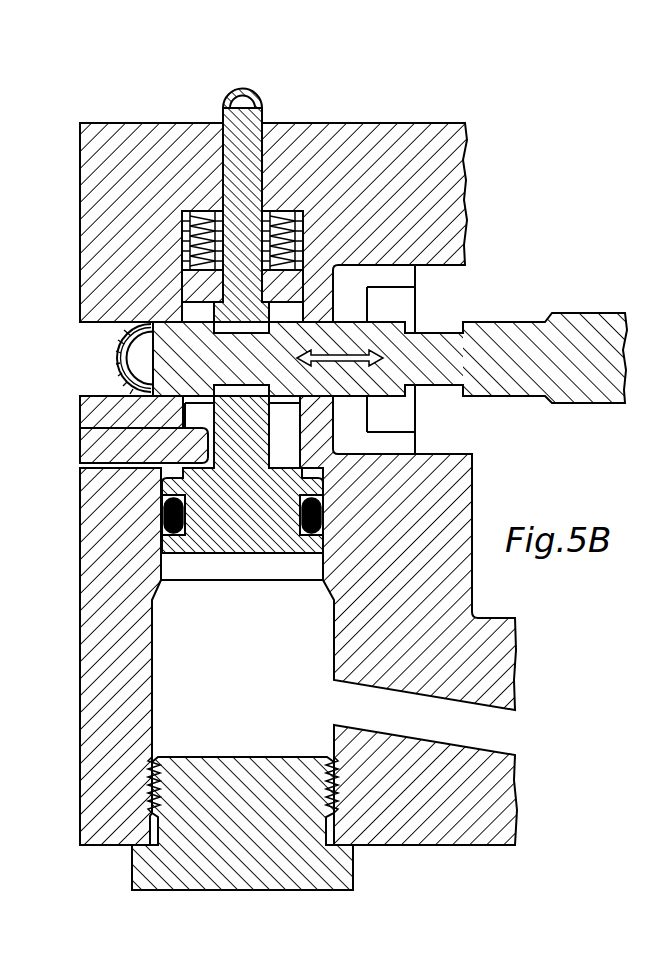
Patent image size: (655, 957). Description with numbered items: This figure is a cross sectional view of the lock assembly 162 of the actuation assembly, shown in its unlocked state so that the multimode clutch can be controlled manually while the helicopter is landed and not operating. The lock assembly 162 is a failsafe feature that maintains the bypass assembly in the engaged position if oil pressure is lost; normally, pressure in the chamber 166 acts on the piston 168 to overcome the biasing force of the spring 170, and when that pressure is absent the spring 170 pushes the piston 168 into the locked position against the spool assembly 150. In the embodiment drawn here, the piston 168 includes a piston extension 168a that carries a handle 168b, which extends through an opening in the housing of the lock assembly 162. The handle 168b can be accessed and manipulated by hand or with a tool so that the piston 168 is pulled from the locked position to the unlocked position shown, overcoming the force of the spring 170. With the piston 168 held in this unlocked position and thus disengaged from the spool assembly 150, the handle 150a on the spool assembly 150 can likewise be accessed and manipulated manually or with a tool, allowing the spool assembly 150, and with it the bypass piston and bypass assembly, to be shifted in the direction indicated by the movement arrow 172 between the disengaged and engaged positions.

The spool assembly 150 is at (530, 338).
The handle 150a is at (120, 359).
The lock assembly 162 is at (495, 252).
The chamber 166 is at (262, 666).
The piston 168 is at (313, 485).
The piston extension 168a is at (223, 152).
The handle 168b is at (243, 92).
The spring 170 is at (279, 222).
The movement arrow 172 is at (348, 357).